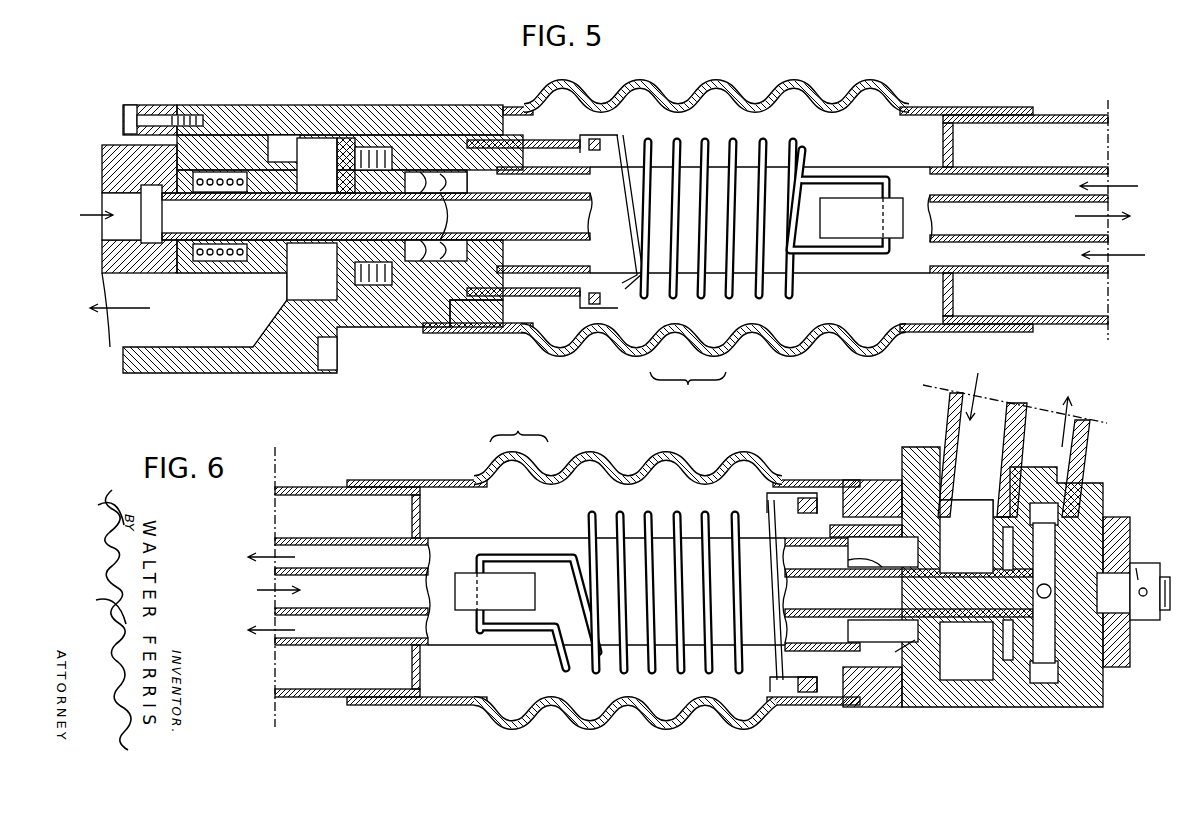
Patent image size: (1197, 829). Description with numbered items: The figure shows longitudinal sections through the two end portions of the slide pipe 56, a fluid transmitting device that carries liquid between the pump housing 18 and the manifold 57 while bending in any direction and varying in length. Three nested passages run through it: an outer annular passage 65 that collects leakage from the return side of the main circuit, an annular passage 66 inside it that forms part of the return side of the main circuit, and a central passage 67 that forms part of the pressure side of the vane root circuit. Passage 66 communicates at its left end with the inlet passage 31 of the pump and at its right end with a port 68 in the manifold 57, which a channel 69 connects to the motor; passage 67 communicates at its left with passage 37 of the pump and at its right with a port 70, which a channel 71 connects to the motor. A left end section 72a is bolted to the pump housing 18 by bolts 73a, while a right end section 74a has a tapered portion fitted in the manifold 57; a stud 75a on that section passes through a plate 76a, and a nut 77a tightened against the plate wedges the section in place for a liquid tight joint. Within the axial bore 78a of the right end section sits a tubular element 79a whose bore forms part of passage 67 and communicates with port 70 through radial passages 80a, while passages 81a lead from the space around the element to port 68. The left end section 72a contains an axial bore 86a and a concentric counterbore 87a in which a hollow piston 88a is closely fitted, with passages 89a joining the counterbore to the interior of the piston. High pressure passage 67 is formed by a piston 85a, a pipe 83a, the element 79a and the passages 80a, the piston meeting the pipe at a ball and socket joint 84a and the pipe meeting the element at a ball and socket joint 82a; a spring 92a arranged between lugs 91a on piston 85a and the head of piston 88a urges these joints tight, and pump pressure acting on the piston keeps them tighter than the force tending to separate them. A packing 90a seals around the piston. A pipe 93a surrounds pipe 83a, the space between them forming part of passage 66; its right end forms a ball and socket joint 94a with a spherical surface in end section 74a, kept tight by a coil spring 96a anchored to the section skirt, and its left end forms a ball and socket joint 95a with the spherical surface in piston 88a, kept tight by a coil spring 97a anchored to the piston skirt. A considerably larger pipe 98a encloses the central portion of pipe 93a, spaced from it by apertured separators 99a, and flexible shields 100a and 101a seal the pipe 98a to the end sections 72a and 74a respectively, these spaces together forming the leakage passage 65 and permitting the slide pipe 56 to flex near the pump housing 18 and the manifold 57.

In FIG. 5, the pump housing 18 is at (100, 161).
In FIG. 5, the inlet passage 31 is at (138, 334).
In FIG. 5, the passage 37 is at (108, 228).
In FIG. 5, the slide pipe 56 is at (688, 389).
In FIG. 6, the slide pipe 56 is at (603, 450).
In FIG. 6, the manifold 57 is at (1093, 692).
In FIG. 5, the outer annular passage 65 is at (573, 329).
In FIG. 6, the outer annular passage 65 is at (497, 700).
In FIG. 5, the annular passage 66 is at (220, 333).
In FIG. 6, the annular passage 66 is at (382, 628).
In FIG. 5, the central passage 67 is at (206, 225).
In FIG. 6, the central passage 67 is at (385, 597).
In FIG. 6, the port 68 is at (959, 512).
In FIG. 6, the channel 69 is at (940, 412).
In FIG. 6, the port 70 is at (1040, 517).
In FIG. 6, the channel 71 is at (1087, 441).
In FIG. 5, the left end section 72a is at (226, 125).
In FIG. 5, the bolt 73a is at (124, 120).
In FIG. 6, the right end section 74a is at (863, 490).
In FIG. 6, the stud 75a is at (1170, 610).
In FIG. 6, the plate 76a is at (1120, 648).
In FIG. 6, the nut 77a is at (1138, 570).
In FIG. 6, the axial bore 78a is at (910, 662).
In FIG. 6, the tubular element 79a is at (980, 569).
In FIG. 6, the radial passages 80a is at (1037, 590).
In FIG. 6, the passages 81a is at (973, 652).
In FIG. 6, the ball and socket joint 82a is at (904, 564).
In FIG. 5, the pipe 83a is at (560, 189).
In FIG. 6, the pipe 83a is at (790, 570).
In FIG. 5, the ball and socket joint 84a is at (456, 195).
In FIG. 5, the piston 85a is at (278, 262).
In FIG. 5, the axial bore 86a is at (253, 262).
In FIG. 5, the counterbore 87a is at (321, 138).
In FIG. 5, the hollow piston 88a is at (408, 150).
In FIG. 5, the passages 89a is at (345, 162).
In FIG. 5, the packing 90a is at (233, 190).
In FIG. 5, the lugs 91a is at (410, 192).
In FIG. 5, the spring 92a is at (372, 262).
In FIG. 5, the pipe 93a is at (884, 177).
In FIG. 6, the pipe 93a is at (503, 547).
In FIG. 6, the ball and socket joint 94a is at (880, 706).
In FIG. 5, the ball and socket joint 95a is at (450, 326).
In FIG. 6, the coil spring 96a is at (650, 530).
In FIG. 5, the coil spring 97a is at (708, 155).
In FIG. 5, the pipe 98a is at (1067, 97).
In FIG. 6, the pipe 98a is at (300, 487).
In FIG. 5, the apertured separators 99a is at (955, 128).
In FIG. 6, the apertured separators 99a is at (413, 499).
In FIG. 5, the flexible shield 100a is at (696, 92).
In FIG. 6, the flexible shield 101a is at (576, 727).